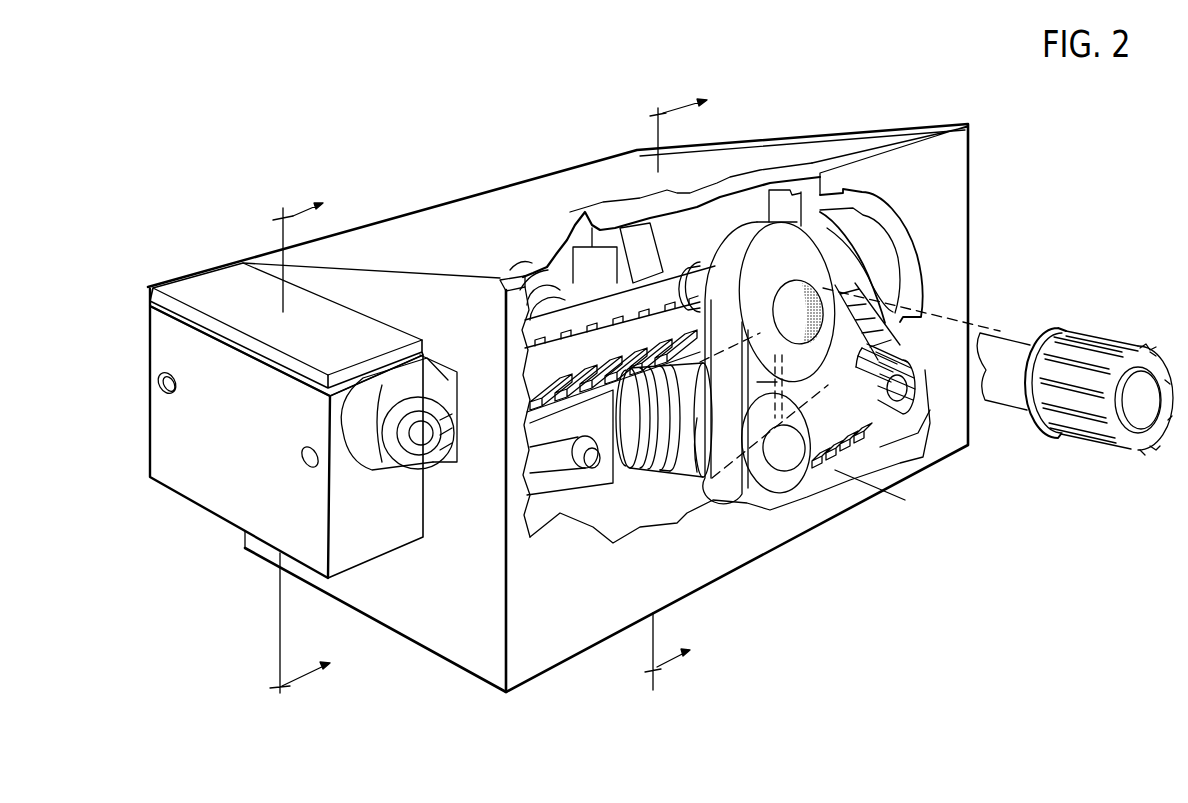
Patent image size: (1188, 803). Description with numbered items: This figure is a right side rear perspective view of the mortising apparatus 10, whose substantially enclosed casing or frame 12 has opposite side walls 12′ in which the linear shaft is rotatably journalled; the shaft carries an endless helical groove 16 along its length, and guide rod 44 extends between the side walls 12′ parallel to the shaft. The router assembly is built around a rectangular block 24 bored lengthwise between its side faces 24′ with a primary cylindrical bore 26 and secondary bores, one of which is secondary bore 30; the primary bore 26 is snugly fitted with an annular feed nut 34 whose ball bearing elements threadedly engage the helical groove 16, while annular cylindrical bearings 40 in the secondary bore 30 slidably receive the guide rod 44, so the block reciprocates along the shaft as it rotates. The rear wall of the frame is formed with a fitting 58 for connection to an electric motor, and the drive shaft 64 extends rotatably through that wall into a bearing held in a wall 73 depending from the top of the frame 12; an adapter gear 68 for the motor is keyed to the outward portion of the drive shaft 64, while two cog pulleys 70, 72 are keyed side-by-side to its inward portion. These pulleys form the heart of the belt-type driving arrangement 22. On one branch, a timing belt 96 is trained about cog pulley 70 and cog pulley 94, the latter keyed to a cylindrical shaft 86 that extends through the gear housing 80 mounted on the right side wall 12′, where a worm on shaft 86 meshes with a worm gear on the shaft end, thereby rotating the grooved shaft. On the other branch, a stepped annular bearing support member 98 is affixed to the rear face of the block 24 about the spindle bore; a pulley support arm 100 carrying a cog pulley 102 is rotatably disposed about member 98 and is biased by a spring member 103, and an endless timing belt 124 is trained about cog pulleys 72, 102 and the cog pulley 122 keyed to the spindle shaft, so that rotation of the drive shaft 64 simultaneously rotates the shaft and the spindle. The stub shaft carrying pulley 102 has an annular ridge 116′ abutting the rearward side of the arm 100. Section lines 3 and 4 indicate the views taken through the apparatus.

The mortising apparatus 10 is at (555, 201).
The casing or frame 12 is at (836, 135).
The side walls 12′ is at (465, 644).
The section line 3- 3 is at (288, 455).
The section line 4- 4 is at (667, 397).
The endless helical groove 16 is at (920, 470).
The belt-type driving arrangement 22 is at (838, 470).
The rectangular block 24 is at (580, 224).
The side faces 24′ is at (542, 266).
The primary cylindrical bore 26 is at (517, 265).
The secondary cylindrical bore 30 is at (600, 480).
The annular feed nut 34 is at (510, 307).
The annular cylindrical bearings 40 is at (592, 427).
The cylindrical guide rod 44 is at (565, 476).
The fitting 58 is at (900, 232).
The drive shaft 64 is at (780, 332).
The adapter gear 68 is at (1140, 358).
The cog pulley 70 is at (692, 258).
The cog pulley 72 is at (803, 278).
The wall 73 is at (723, 240).
The gear housing 80 is at (245, 442).
The cylindrical shaft 86 is at (440, 455).
The cog pulley 94 is at (395, 470).
The timing belt 96 is at (391, 411).
The stepped annular bearing support member 98 is at (697, 463).
The pulley support arm 100 is at (667, 470).
The cog pulley 102 is at (830, 458).
The spring member 103 is at (647, 470).
The annular ridge 116′ is at (830, 380).
The cog pulley 122 is at (772, 483).
The endless timing belt 124 is at (735, 341).